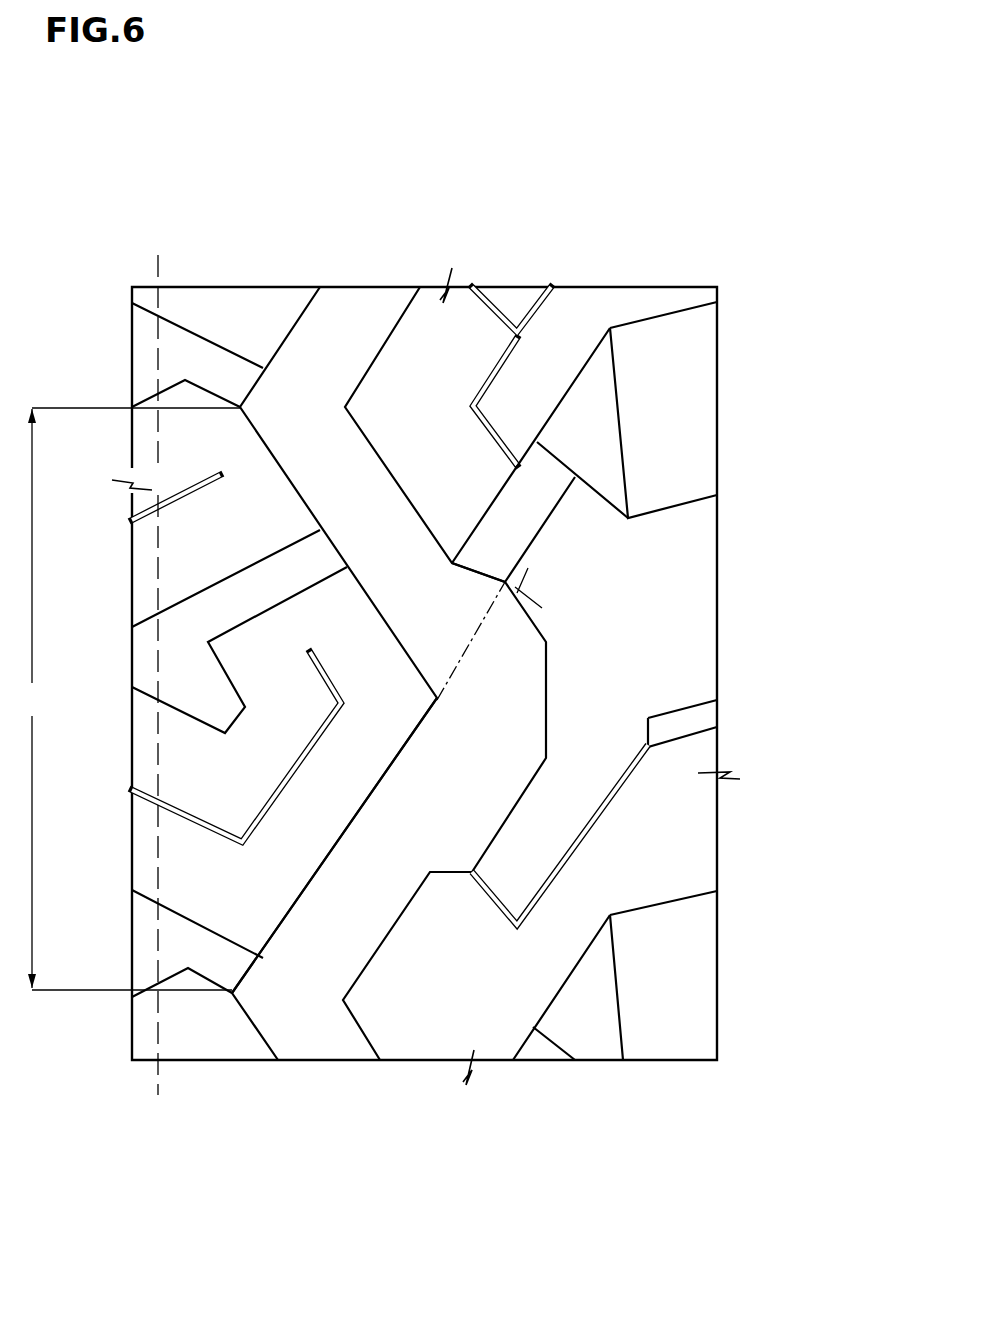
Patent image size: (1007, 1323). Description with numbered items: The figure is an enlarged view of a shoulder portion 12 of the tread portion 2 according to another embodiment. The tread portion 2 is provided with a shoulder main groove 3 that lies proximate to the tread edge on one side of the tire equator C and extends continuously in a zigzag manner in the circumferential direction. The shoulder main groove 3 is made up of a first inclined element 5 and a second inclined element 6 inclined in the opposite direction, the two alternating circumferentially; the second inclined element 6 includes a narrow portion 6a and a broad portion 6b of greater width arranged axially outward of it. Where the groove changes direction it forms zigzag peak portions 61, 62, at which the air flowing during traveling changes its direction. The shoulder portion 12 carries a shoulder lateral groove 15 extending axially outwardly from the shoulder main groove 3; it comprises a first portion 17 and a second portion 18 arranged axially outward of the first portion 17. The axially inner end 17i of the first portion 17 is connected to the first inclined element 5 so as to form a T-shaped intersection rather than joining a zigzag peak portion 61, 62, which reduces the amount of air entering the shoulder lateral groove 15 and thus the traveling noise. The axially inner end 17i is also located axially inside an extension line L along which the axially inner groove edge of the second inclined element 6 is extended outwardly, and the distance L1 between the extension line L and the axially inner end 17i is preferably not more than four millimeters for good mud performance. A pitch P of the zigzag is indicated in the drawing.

The tread portion 2 is at (313, 202).
The shoulder portion 12 is at (705, 250).
The shoulder main groove 3 is at (347, 326).
The second inclined element 6 is at (330, 350).
The narrow portion 6a is at (353, 918).
The broad portion 6b is at (468, 835).
The zigzag peak portion 62 is at (280, 405).
The first inclined element 5 is at (162, 444).
The shoulder lateral groove 15 is at (803, 318).
The first portion 17 is at (550, 491).
The axially inner end 17i is at (478, 563).
The second portion 18 is at (602, 437).
The zigzag peak portion 61 is at (652, 727).
The extension line L is at (488, 627).
The distance L1 is at (508, 585).
The pitch length P is at (130, 699).
The tire equator C is at (157, 660).